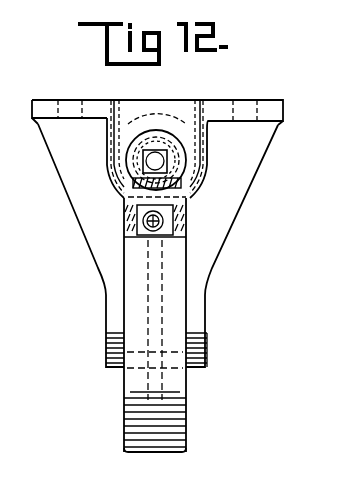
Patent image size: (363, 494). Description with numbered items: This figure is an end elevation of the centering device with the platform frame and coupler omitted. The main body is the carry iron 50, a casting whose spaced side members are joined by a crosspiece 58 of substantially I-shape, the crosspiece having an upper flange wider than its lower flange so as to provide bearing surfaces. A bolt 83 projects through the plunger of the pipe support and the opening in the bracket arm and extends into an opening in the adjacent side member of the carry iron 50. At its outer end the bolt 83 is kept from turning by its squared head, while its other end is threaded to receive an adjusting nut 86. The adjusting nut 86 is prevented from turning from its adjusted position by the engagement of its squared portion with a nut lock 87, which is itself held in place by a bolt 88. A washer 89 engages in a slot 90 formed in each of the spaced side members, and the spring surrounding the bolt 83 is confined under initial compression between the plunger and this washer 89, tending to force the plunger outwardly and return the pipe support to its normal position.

The carry iron 50 is at (208, 366).
The crosspiece 58 is at (162, 452).
The bolt 83 is at (187, 170).
The adjusting nut 86 is at (165, 158).
The nut lock 87 is at (180, 201).
The bolt 88 is at (147, 219).
The washer 89 is at (198, 110).
The slot 90 is at (117, 104).